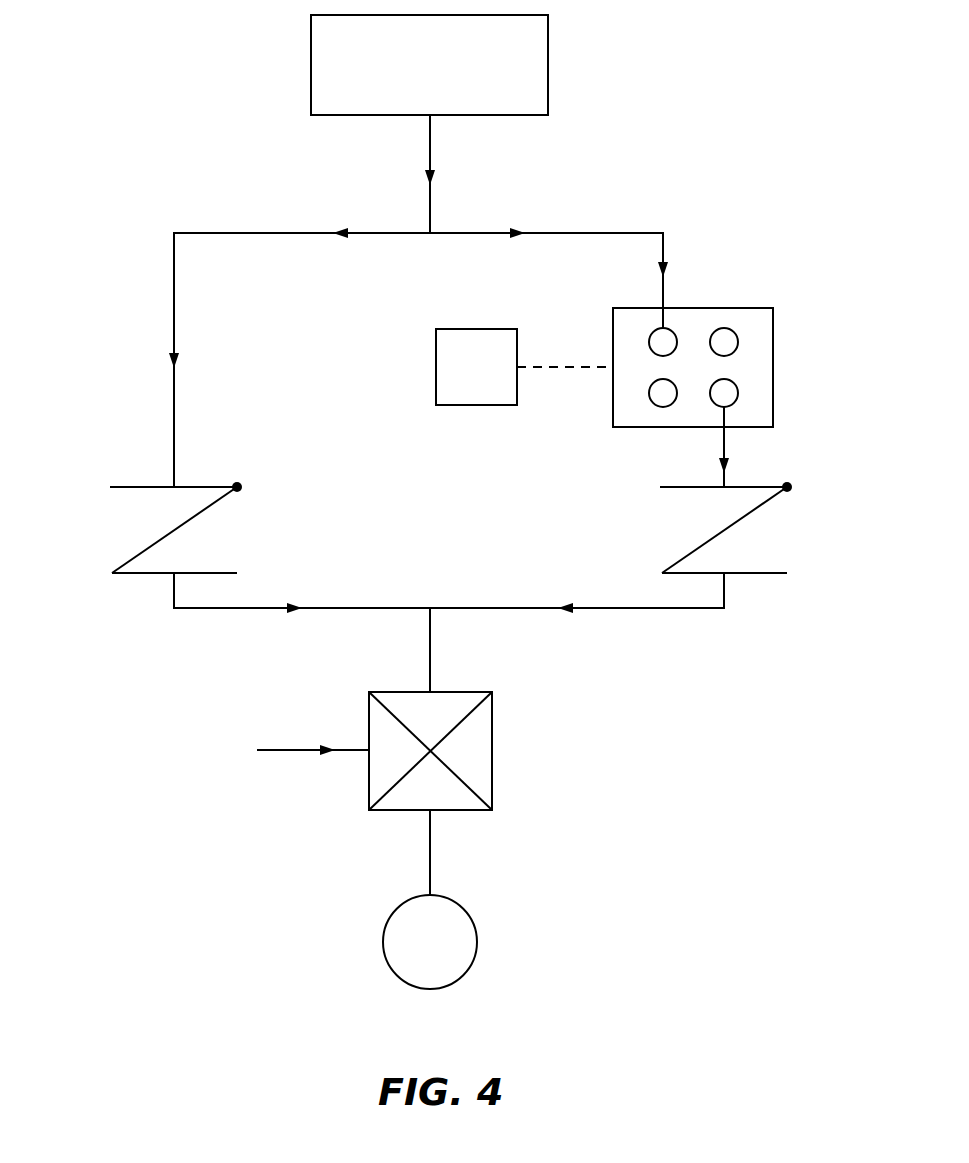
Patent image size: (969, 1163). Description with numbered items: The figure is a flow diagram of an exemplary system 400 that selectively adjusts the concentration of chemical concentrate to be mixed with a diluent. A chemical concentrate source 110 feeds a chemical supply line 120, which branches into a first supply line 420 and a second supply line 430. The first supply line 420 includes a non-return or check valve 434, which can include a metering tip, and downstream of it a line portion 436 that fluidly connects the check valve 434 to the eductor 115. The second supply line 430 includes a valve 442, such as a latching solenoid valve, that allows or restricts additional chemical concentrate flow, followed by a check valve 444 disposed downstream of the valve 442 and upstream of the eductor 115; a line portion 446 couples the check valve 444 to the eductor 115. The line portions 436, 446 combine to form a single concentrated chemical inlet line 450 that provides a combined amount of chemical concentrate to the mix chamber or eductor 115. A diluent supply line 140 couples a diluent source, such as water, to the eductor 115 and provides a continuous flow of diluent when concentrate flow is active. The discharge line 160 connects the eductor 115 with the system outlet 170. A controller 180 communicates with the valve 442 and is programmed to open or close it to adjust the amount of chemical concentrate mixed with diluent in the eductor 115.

The system 400 is at (704, 90).
The chemical concentrate source 110 is at (311, 65).
The chemical supply line 120 is at (430, 152).
The first supply line 420 is at (230, 233).
The second supply line 430 is at (568, 233).
The valve 442 is at (773, 345).
The controller 180 is at (475, 405).
The check valve 444 is at (747, 513).
The check valve 434 is at (170, 528).
The line portion 436 is at (170, 592).
The line portion 446 is at (638, 610).
The concentrated chemical inlet line 450 is at (430, 655).
The eductor 115 is at (492, 745).
The diluent supply line 140 is at (292, 752).
The discharge line 160 is at (430, 850).
The system outlet 170 is at (473, 917).